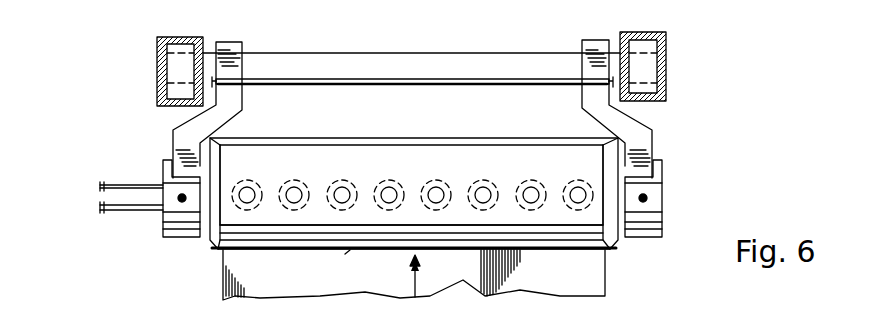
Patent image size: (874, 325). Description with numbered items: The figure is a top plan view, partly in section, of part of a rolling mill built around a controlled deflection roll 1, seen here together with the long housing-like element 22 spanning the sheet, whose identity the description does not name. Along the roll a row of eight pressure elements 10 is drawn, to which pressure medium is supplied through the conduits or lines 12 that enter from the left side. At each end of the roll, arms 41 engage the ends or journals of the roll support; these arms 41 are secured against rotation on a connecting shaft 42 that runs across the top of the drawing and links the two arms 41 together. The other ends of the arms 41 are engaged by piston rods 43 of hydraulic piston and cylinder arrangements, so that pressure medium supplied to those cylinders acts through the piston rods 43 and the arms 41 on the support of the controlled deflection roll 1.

The controlled deflection roll 1 is at (352, 249).
The pressure elements 10 is at (288, 180).
The conduits or lines 12 is at (100, 186).
The nozzle beam housing 22 is at (468, 138).
The arms 41 is at (182, 130).
The connecting shaft 42 is at (310, 60).
The piston rods 43 is at (180, 195).